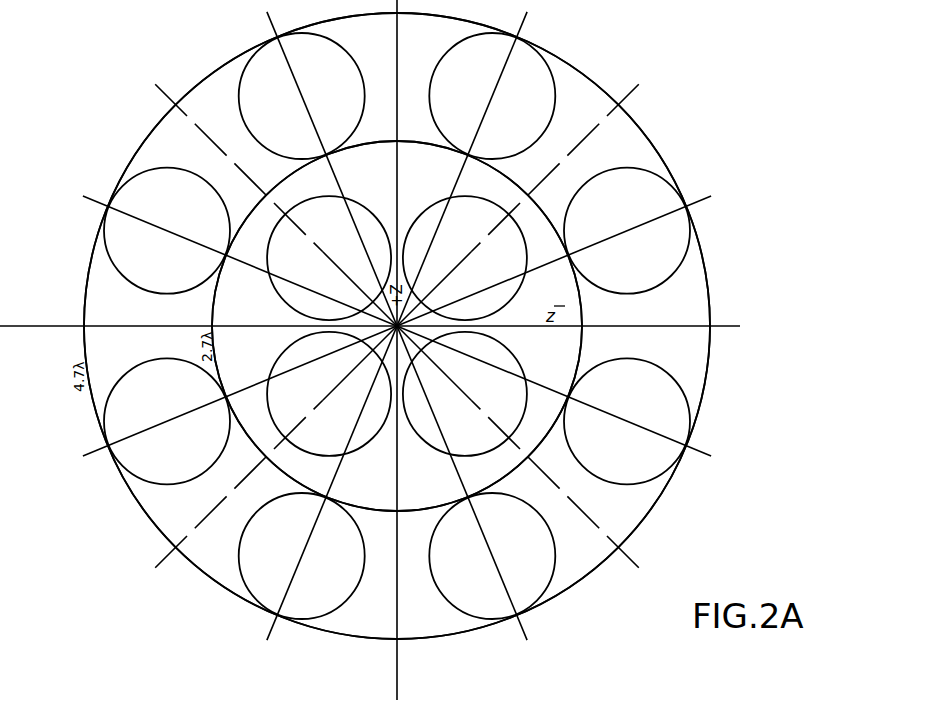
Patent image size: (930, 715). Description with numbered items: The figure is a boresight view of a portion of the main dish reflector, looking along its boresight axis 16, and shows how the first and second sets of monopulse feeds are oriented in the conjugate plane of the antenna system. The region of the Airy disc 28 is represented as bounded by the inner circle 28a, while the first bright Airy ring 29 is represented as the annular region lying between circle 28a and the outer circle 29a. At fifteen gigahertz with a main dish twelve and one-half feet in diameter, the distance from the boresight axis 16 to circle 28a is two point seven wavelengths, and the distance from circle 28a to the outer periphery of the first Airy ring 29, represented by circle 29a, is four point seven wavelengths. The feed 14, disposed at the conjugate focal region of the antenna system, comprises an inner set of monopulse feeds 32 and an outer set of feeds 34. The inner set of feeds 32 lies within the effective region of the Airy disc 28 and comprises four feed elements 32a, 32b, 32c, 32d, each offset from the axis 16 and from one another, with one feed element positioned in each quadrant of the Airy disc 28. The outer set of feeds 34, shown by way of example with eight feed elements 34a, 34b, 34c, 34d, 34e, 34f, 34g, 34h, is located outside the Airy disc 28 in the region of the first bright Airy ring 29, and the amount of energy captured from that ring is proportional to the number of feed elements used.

The feed 14 is at (716, 263).
The boresight axis 16 is at (352, 316).
The Airy disc 28 is at (437, 177).
The circle 28a is at (537, 203).
The first bright Airy ring 29 is at (437, 42).
The circle 29a is at (563, 60).
The inner set of monopulse feeds 32 is at (384, 208).
The feed element 32a is at (509, 272).
The feed element 32b is at (504, 399).
The feed element 32c is at (312, 400).
The feed element 32d is at (315, 272).
The outer set of feeds 34 is at (222, 100).
The feed element 34a is at (332, 66).
The feed element 34b is at (475, 97).
The feed element 34c is at (646, 274).
The feed element 34d is at (630, 471).
The feed element 34e is at (480, 588).
The feed element 34f is at (289, 550).
The feed element 34g is at (180, 400).
The feed element 34h is at (170, 274).